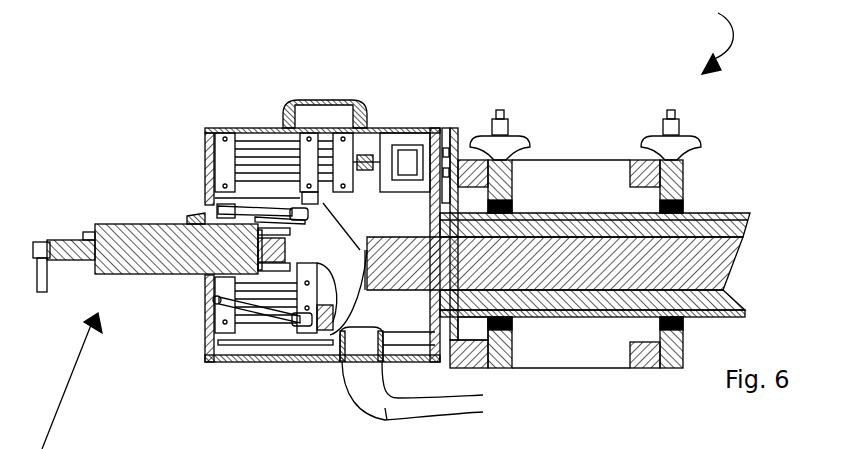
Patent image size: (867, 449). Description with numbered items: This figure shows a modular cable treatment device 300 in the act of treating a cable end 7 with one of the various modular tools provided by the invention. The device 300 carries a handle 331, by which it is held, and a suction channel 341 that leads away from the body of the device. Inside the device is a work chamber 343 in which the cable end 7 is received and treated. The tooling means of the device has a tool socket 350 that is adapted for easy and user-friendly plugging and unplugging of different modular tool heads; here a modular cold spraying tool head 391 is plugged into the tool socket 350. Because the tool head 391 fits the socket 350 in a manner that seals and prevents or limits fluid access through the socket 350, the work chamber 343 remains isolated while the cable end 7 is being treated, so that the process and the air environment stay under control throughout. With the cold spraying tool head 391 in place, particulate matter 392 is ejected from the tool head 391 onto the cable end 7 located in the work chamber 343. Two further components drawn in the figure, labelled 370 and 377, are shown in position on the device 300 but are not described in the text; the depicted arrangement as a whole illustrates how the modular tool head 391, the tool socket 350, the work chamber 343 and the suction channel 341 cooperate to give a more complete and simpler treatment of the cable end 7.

The modular cable treatment device 300 is at (557, 272).
The handle 331 is at (282, 126).
The suction channel 341 is at (387, 420).
The work chamber 343 is at (377, 207).
The tool socket 350 is at (200, 222).
The sensor 370 is at (410, 158).
The lower nozzle 377 is at (202, 298).
The modular cold spraying tool head 391 is at (157, 225).
The particulate matter 392 is at (328, 205).
The cable end 7 is at (310, 322).